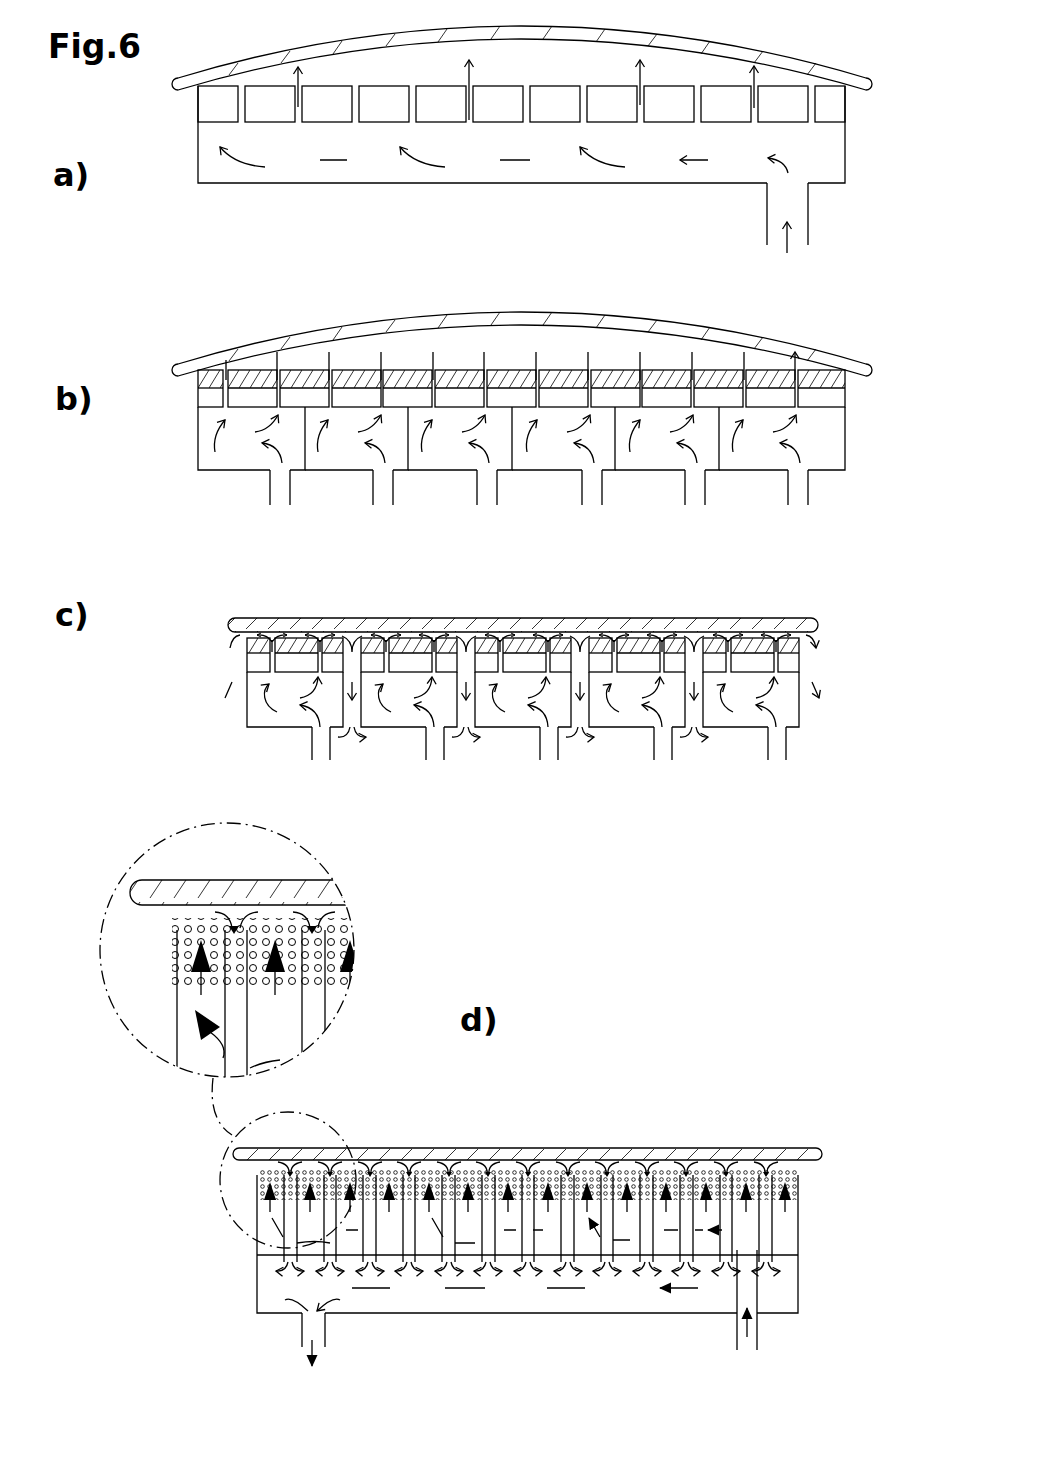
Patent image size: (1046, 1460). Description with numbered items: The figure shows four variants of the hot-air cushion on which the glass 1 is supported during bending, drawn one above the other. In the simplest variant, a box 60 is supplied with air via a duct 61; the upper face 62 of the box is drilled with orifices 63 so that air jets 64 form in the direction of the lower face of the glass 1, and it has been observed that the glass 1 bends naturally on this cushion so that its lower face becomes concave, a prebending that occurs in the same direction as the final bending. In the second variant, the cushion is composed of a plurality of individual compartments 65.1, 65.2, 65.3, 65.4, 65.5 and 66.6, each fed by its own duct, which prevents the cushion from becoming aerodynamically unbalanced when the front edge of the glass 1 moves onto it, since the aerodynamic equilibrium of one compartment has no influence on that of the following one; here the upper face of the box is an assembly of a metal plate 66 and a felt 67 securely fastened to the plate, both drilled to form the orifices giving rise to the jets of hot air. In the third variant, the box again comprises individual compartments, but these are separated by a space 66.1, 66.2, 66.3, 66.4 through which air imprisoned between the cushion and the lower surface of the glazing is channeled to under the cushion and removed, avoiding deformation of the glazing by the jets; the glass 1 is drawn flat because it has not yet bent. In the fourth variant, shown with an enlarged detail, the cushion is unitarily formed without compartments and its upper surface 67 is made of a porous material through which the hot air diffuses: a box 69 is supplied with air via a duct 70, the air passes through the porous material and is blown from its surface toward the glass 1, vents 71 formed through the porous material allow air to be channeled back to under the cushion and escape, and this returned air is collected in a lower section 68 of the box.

The glass 1 is at (795, 55).
The box 60 is at (383, 170).
The duct 61 is at (810, 200).
The upper face 62 is at (373, 85).
The orifices 63 is at (470, 120).
The air jets 64 is at (297, 80).
The individual compartment 65.1 is at (242, 458).
The individual compartment 65.2 is at (347, 458).
The individual compartment 65.3 is at (450, 458).
The individual compartment 65.4 is at (550, 458).
The individual compartment 65.5 is at (655, 458).
The individual compartment 66.6 is at (760, 458).
The metal plate 66 is at (210, 395).
The felt 67 is at (252, 372).
The space 66.1 is at (353, 715).
The space 66.2 is at (467, 715).
The space 66.3 is at (582, 715).
The space 66.4 is at (699, 715).
The lower section 68 is at (635, 1293).
The box 69 is at (750, 1220).
The duct 70 is at (758, 1330).
The vents 71 is at (560, 1242).